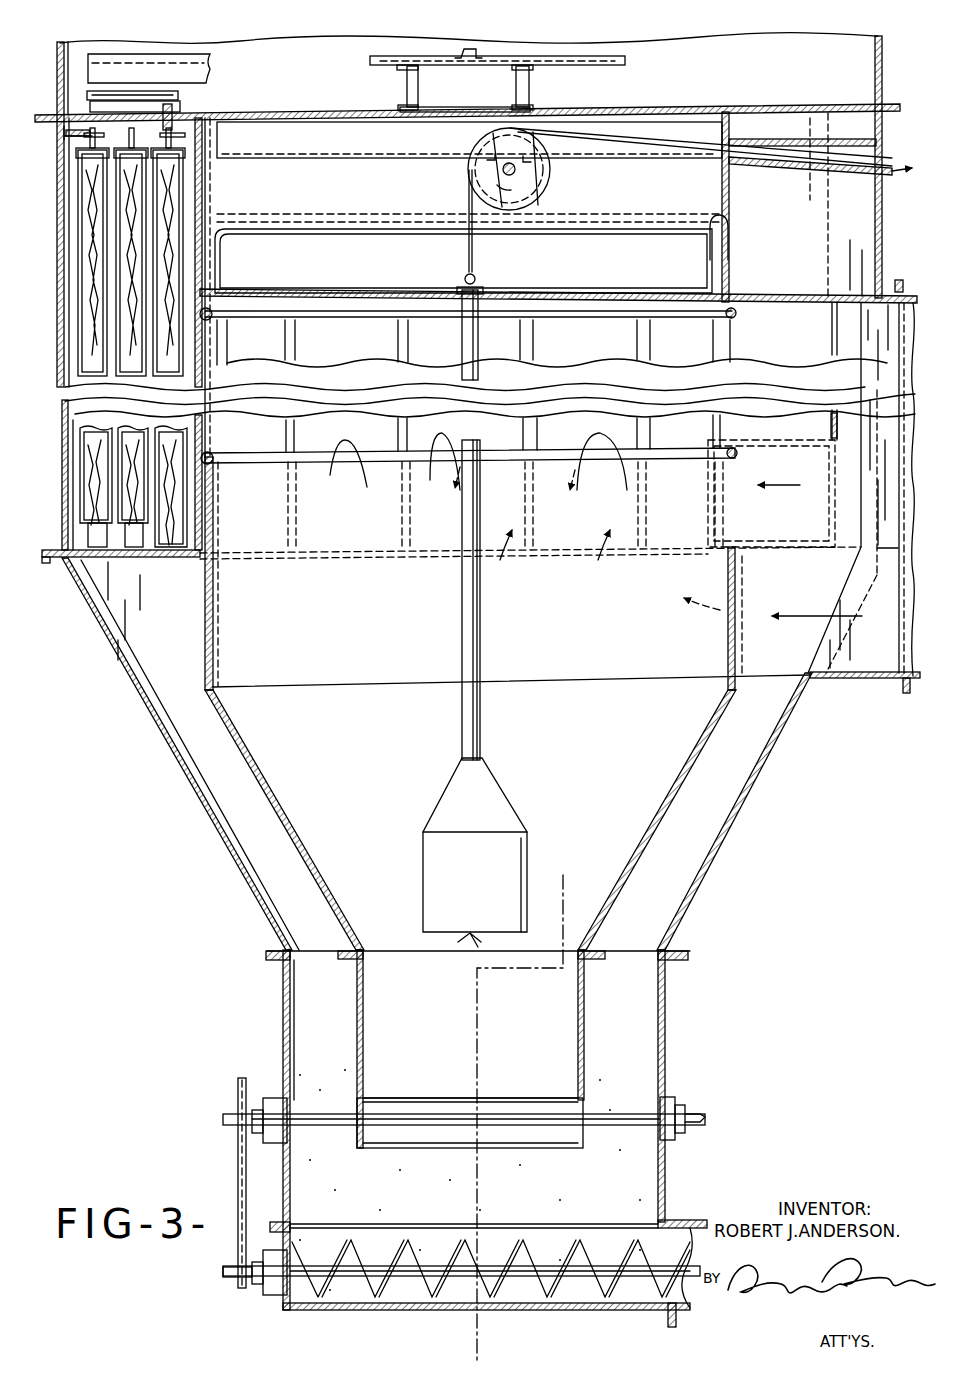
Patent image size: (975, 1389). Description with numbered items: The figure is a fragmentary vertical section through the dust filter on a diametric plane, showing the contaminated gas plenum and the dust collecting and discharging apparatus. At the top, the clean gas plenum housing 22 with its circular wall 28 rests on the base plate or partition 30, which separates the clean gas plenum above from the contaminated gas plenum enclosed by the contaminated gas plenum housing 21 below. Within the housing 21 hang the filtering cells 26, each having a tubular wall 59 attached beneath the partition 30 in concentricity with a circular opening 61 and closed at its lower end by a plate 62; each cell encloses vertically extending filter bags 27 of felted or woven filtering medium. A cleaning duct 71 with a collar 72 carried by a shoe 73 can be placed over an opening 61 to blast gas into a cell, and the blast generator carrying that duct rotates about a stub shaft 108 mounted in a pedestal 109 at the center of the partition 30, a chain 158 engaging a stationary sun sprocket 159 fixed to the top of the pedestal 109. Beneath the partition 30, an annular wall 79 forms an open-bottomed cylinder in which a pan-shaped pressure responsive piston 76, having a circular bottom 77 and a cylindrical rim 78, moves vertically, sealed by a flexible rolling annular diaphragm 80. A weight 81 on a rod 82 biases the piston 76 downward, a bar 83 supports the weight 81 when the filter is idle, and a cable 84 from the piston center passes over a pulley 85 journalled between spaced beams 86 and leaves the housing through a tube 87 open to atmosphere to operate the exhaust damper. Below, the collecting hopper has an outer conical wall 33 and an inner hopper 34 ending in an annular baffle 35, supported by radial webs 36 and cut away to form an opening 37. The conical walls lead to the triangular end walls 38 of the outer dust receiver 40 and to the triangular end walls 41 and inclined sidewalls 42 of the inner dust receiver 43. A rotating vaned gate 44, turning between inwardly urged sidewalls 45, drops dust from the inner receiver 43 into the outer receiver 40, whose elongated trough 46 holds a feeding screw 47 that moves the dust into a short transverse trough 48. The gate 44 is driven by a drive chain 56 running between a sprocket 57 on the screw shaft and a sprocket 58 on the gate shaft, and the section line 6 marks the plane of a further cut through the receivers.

The section line 6- 6 is at (582, 899).
The contaminated gas plenum housing 21 is at (58, 228).
The clean gas plenum housing 22 is at (744, 81).
The filtering cells 26 is at (266, 353).
The filter bags 27 is at (160, 356).
The circular wall 28 is at (57, 68).
The base plate or partition 30 is at (352, 78).
The outer conical wall 33 is at (160, 720).
The inner hopper 34 is at (238, 745).
The annular baffle 35 is at (214, 632).
The radial webs 36 is at (132, 611).
The opening 37 is at (860, 660).
The triangular end walls 38 is at (283, 1000).
The outer dust receiver 40 is at (645, 1052).
The triangular end walls 41 is at (357, 1026).
The inclined sidewalls 42 is at (434, 1010).
The inner dust receiver 43 is at (556, 1006).
The rotating vaned gate 44 is at (505, 1098).
The inwardly urged sidewalls 45 is at (395, 1150).
The elongated trough 46 is at (355, 1310).
The feeding screw 47 is at (425, 1300).
The short transverse trough 48 is at (668, 1320).
The drive chain 56 is at (238, 1189).
The sprocket 57 is at (240, 1287).
The sprocket 58 is at (238, 1144).
The tubular wall 59 is at (202, 370).
The circular opening 61 is at (63, 137).
The plate 62 is at (200, 556).
The duct 71 is at (212, 56).
The collar 72 is at (180, 94).
The shoe 73 is at (182, 106).
The pressure responsive piston 76 is at (570, 306).
The circular bottom 77 is at (574, 293).
The cylindrical rim 78 is at (700, 263).
The annular wall 79 is at (731, 273).
The flexible rolling annular diaphragm 80 is at (730, 218).
The weight 81 is at (423, 875).
The rod 82 is at (462, 345).
The bar 83 is at (450, 940).
The cable 84 is at (474, 250).
The pulley 85 is at (547, 182).
The beams 86 is at (275, 159).
The tube 87 is at (744, 166).
The stub shaft 108 is at (455, 50).
The pedestal 109 is at (407, 92).
The chain 158 is at (577, 67).
The sun sprocket 159 is at (540, 68).